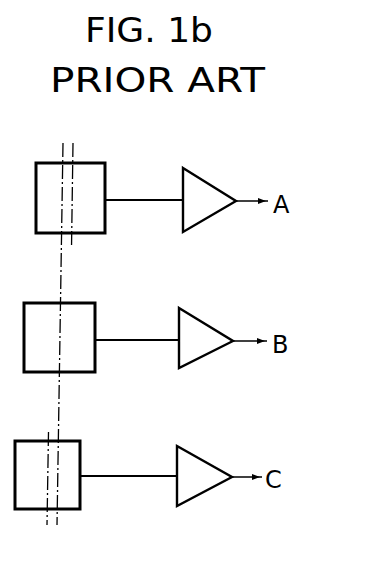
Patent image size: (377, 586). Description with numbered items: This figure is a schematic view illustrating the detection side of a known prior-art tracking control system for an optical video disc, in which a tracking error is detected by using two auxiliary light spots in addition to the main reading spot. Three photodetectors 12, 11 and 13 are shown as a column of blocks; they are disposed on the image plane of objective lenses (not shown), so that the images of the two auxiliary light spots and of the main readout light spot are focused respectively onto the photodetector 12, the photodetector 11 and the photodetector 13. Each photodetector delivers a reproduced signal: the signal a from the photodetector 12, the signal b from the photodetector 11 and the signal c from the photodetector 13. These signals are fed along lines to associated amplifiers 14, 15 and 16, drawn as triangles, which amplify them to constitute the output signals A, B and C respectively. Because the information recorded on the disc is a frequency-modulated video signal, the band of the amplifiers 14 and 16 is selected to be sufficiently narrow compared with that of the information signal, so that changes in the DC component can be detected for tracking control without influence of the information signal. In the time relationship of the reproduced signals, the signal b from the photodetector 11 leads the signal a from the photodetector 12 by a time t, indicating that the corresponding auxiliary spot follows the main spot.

The photodetector 11 is at (95, 313).
The photodetector 12 is at (105, 171).
The photodetector 13 is at (80, 453).
The amplifier 14 is at (218, 186).
The amplifier 15 is at (213, 325).
The amplifier 16 is at (200, 460).
The signal a is at (145, 200).
The signal b is at (143, 340).
The signal c is at (125, 476).